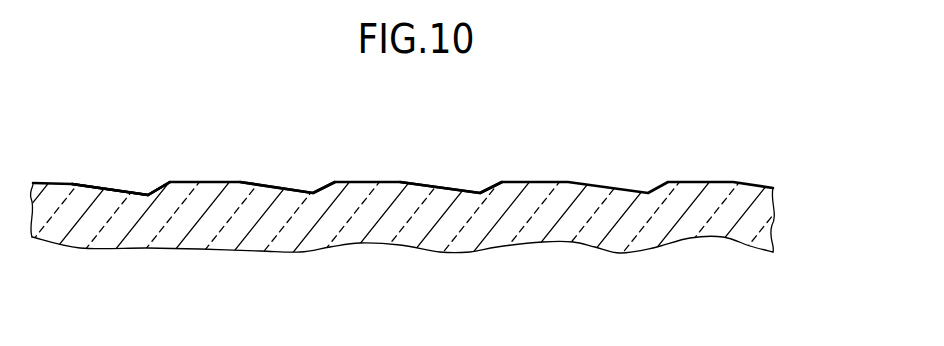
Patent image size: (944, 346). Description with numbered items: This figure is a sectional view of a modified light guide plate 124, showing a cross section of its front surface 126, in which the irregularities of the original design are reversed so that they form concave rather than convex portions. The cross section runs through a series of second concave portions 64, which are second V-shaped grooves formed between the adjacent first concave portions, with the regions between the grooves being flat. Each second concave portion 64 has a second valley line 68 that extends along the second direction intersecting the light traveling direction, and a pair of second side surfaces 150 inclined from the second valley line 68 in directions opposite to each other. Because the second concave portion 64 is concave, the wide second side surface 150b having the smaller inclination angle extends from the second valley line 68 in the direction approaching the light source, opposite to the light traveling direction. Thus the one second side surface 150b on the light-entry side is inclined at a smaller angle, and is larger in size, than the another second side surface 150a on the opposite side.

The pair of second side surfaces 150 is at (190, 105).
The another second side surface 150a is at (160, 181).
The one second side surface 150b is at (107, 188).
The second valley line 68 is at (312, 192).
The second concave portion 64 is at (478, 184).
The front surface 126 is at (757, 182).
The light guide plate 124 is at (707, 241).